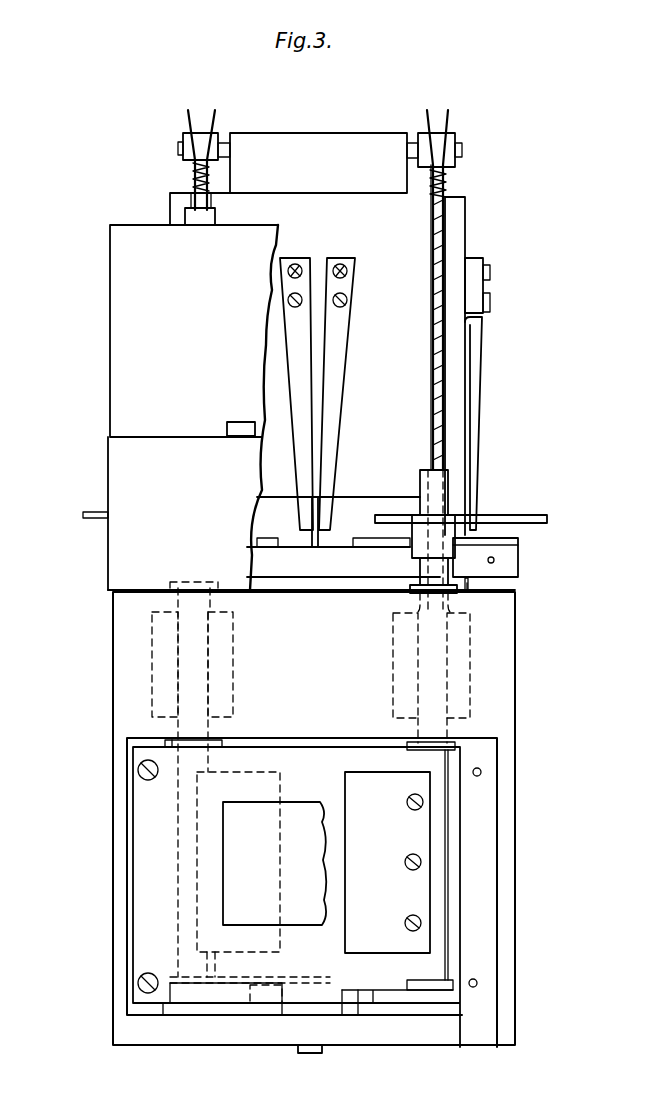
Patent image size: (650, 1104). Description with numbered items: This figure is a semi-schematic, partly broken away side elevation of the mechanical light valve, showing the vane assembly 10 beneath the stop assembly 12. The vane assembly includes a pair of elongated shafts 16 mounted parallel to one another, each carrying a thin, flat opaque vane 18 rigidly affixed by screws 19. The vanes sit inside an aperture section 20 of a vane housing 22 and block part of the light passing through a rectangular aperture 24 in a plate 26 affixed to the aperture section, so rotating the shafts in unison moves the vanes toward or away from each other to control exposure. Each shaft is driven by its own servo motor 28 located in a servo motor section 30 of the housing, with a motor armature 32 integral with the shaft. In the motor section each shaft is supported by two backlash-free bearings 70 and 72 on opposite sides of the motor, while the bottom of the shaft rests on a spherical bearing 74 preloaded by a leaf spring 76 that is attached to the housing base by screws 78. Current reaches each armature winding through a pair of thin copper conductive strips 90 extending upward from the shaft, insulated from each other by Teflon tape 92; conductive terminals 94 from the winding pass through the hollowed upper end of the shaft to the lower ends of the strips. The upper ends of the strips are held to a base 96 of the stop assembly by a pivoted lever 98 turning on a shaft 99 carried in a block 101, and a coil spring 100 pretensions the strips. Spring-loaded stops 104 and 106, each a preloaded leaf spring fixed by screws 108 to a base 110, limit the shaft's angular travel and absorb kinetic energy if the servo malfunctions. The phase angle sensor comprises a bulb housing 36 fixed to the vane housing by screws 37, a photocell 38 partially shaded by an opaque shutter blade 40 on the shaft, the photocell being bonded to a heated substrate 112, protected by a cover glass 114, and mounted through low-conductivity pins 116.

The vane assembly 10 is at (545, 858).
The stop assembly 12 is at (420, 323).
The elongated shafts 16 is at (208, 723).
The opaque vane 18 is at (270, 865).
The screws 19 is at (410, 860).
The aperture section 20 is at (507, 905).
The vane housing 22 is at (295, 892).
The rectangular aperture 24 is at (232, 848).
The plate 26 is at (148, 885).
The servo motor 28 is at (237, 657).
The servo motor section 30 is at (498, 672).
The motor armature 32 is at (152, 640).
The bulb housing 36 is at (125, 318).
The screws 37 is at (240, 422).
The photocell 38 is at (518, 545).
The opaque shutter blade 40 is at (485, 515).
The backlash-free bearing 70 is at (192, 582).
The backlash-free bearing 72 is at (215, 747).
The spherical bearing 74 is at (220, 975).
The leaf spring 76 is at (267, 1003).
The screws 78 is at (310, 1053).
The conductive strips 90 is at (197, 115).
The Teflon tape 92 is at (435, 358).
The conductive terminals 94 is at (425, 490).
The base 96 is at (452, 197).
The pivoted lever 98 is at (218, 140).
The shaft 99 is at (228, 150).
The coil spring 100 is at (193, 175).
The block 101 is at (333, 133).
The spring-loaded stop 104 is at (346, 373).
The spring-loaded stop 106 is at (476, 413).
The screws 108 is at (340, 266).
The base 110 is at (435, 285).
The substrate 112 is at (505, 563).
The cover glass 114 is at (507, 538).
The pins 116 is at (493, 557).